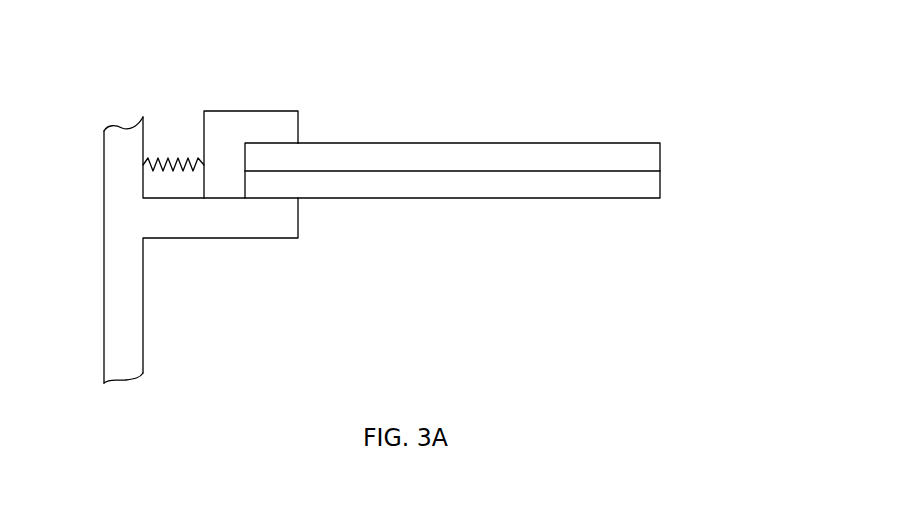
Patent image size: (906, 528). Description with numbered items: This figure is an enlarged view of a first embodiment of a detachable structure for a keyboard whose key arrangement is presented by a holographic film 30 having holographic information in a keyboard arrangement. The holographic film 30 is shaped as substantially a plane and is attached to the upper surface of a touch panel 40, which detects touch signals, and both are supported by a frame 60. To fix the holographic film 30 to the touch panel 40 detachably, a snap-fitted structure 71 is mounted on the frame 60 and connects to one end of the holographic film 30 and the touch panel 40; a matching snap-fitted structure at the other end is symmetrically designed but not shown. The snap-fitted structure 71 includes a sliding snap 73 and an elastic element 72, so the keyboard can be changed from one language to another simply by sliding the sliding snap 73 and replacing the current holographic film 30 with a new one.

The holographic film 30 is at (630, 155).
The touch panel 40 is at (638, 188).
The frame 60 is at (136, 218).
The snap-fitted structure 71 is at (207, 88).
The elastic element 72 is at (178, 160).
The sliding snap 73 is at (252, 127).